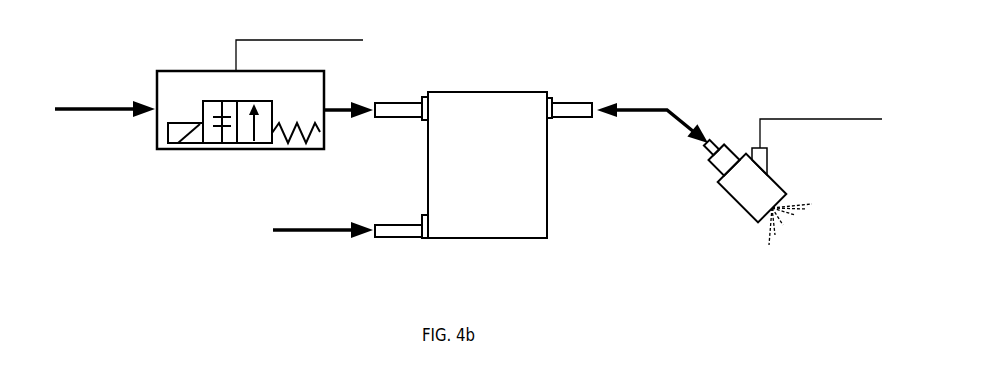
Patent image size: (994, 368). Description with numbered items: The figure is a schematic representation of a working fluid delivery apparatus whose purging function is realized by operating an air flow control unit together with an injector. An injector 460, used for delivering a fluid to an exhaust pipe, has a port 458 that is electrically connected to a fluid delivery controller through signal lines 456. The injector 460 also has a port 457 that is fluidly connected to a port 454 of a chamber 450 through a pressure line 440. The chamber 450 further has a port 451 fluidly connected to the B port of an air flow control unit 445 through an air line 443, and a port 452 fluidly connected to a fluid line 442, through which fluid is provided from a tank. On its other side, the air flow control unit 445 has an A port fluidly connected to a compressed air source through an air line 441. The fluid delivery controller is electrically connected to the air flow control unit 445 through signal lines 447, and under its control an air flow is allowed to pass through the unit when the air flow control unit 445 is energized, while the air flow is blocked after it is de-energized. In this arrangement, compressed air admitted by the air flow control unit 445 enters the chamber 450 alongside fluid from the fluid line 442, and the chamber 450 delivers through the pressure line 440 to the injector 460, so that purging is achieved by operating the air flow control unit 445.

The pressure line 440 is at (666, 110).
The air line 441 is at (123, 101).
The fluid line 442 is at (328, 228).
The air line 443 is at (335, 113).
The air flow control unit 445 is at (206, 68).
The signal lines 447 is at (307, 40).
The chamber 450 is at (548, 190).
The port 451 is at (415, 103).
The port 452 is at (415, 224).
The port 454 is at (556, 119).
The signal lines 456 is at (833, 119).
The port 457 is at (711, 152).
The port 458 is at (767, 153).
The injector 460 is at (784, 176).